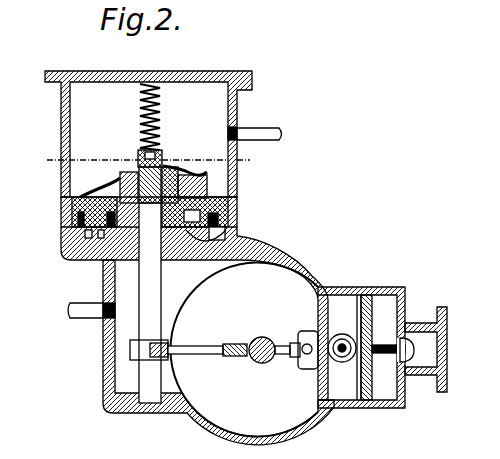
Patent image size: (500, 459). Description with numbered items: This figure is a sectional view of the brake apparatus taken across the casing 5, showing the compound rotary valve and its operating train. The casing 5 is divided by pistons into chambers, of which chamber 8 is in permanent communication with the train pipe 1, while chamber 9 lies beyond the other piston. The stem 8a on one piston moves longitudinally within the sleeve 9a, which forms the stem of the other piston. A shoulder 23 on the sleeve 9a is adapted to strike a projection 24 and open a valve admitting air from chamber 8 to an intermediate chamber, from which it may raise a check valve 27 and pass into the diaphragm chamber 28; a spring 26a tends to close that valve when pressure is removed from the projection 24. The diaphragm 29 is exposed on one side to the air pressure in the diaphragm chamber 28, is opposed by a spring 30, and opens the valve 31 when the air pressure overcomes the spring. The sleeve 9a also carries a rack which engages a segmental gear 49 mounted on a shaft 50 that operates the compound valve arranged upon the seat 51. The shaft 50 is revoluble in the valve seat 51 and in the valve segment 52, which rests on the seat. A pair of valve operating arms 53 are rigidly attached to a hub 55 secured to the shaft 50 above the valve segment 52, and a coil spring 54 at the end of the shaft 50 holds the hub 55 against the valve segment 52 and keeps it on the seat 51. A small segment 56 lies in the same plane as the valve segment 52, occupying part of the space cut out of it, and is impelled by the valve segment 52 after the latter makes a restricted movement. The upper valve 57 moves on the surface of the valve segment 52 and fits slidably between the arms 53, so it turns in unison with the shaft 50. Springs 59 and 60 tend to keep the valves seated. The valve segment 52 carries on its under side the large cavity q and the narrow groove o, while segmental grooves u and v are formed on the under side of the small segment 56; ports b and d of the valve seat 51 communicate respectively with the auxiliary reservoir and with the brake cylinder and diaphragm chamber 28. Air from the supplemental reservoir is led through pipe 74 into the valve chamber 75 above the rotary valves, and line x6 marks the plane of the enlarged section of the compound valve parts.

The train pipe 1 is at (88, 323).
The casing 5 is at (315, 262).
The chamber 8 is at (244, 350).
The stem 8a is at (259, 356).
The chamber 9 is at (66, 256).
The sleeve 9a is at (272, 345).
The shoulder 23 is at (266, 363).
The projection 24 is at (305, 332).
The spring 26a is at (307, 372).
The check valve 27 is at (343, 334).
The diaphragm chamber 28 is at (342, 362).
The diaphragm 29 is at (367, 402).
The spring 30 is at (388, 330).
The valve 31 is at (416, 350).
The segmental gear 49 is at (237, 345).
The shaft 50 is at (151, 303).
The valve seat 51 is at (238, 243).
The valve segment 52 is at (237, 216).
The valve operating arms 53 is at (242, 170).
The coil spring 54 is at (161, 100).
The hub 55 is at (125, 172).
The small segment 56 is at (62, 208).
The upper valve 57 is at (207, 178).
The spring 59 is at (106, 193).
The spring 60 is at (186, 172).
The pipe 74 is at (260, 128).
The valve chamber 75 is at (205, 125).
The section line x6 is at (148, 160).
The port b is at (95, 264).
The port d is at (257, 250).
The groove o is at (238, 228).
The cavity q is at (240, 232).
The segmental groove u is at (62, 240).
The segmental groove v is at (64, 227).